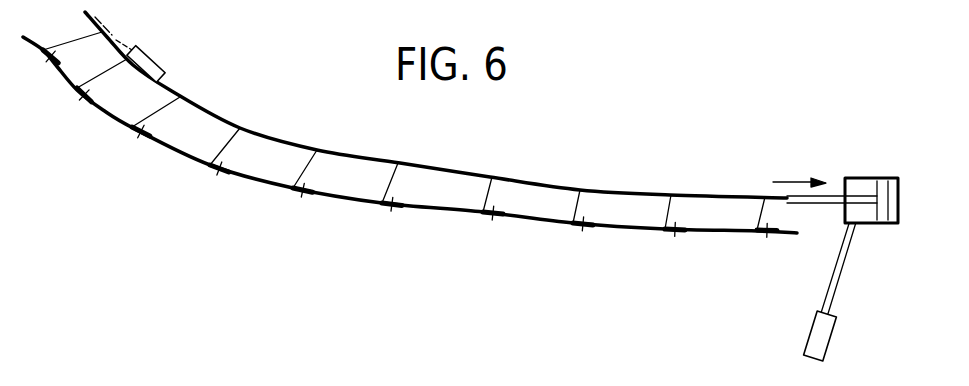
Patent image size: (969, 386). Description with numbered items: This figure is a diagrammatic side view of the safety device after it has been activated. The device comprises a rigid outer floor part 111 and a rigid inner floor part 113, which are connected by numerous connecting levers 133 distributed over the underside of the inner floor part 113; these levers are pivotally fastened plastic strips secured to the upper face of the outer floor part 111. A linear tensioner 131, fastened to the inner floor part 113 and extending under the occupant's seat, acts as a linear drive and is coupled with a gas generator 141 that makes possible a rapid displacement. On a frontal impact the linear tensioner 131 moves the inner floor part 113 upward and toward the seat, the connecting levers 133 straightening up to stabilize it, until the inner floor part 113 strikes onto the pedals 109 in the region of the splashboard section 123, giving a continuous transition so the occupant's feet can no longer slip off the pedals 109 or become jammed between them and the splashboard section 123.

The pedals 109 is at (155, 58).
The outer floor part 111 is at (430, 212).
The inner floor part 113 is at (483, 175).
The splashboard section 123 is at (190, 74).
The linear tensioner 131 is at (878, 178).
The connecting levers 133 is at (376, 192).
The gas generator 141 is at (822, 337).